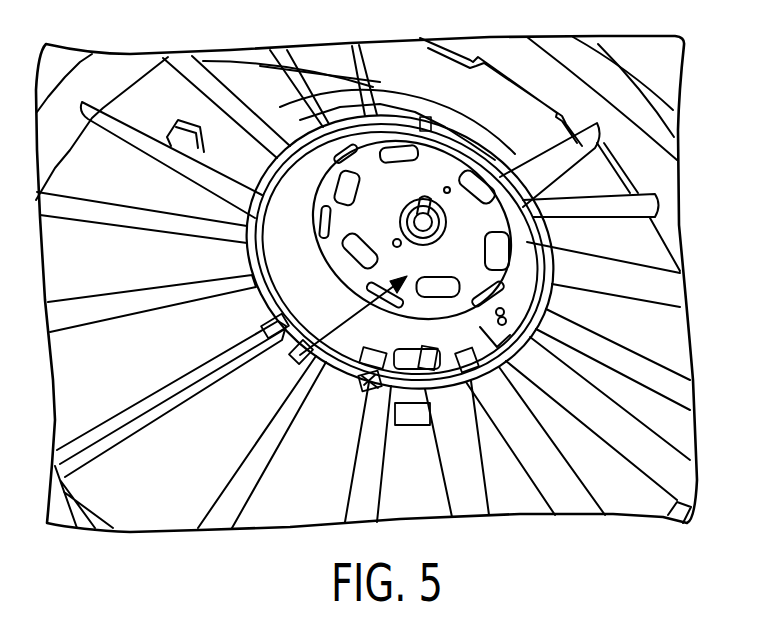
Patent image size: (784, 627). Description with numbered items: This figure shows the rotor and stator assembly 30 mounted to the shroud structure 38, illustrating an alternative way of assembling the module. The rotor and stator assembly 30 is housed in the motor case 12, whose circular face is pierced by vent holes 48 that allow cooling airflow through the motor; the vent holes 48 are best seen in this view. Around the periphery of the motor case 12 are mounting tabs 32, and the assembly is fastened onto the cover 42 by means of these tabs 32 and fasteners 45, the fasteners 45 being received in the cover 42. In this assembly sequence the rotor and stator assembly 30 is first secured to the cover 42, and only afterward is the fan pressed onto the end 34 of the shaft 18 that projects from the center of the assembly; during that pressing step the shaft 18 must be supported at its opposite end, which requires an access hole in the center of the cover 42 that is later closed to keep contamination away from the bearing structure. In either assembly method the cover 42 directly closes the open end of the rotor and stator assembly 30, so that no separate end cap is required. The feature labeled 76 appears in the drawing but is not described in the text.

The motor case 12 is at (523, 202).
The shaft 18 is at (428, 200).
The rotor and stator assembly 30 is at (303, 357).
The mounting tabs 32 is at (460, 403).
The end of shaft 34 is at (512, 142).
The fan housing 38 is at (670, 230).
The cover 42 is at (350, 387).
The fasteners 45 is at (565, 362).
The vent holes 48 is at (493, 260).
The vent slot 76 is at (340, 220).